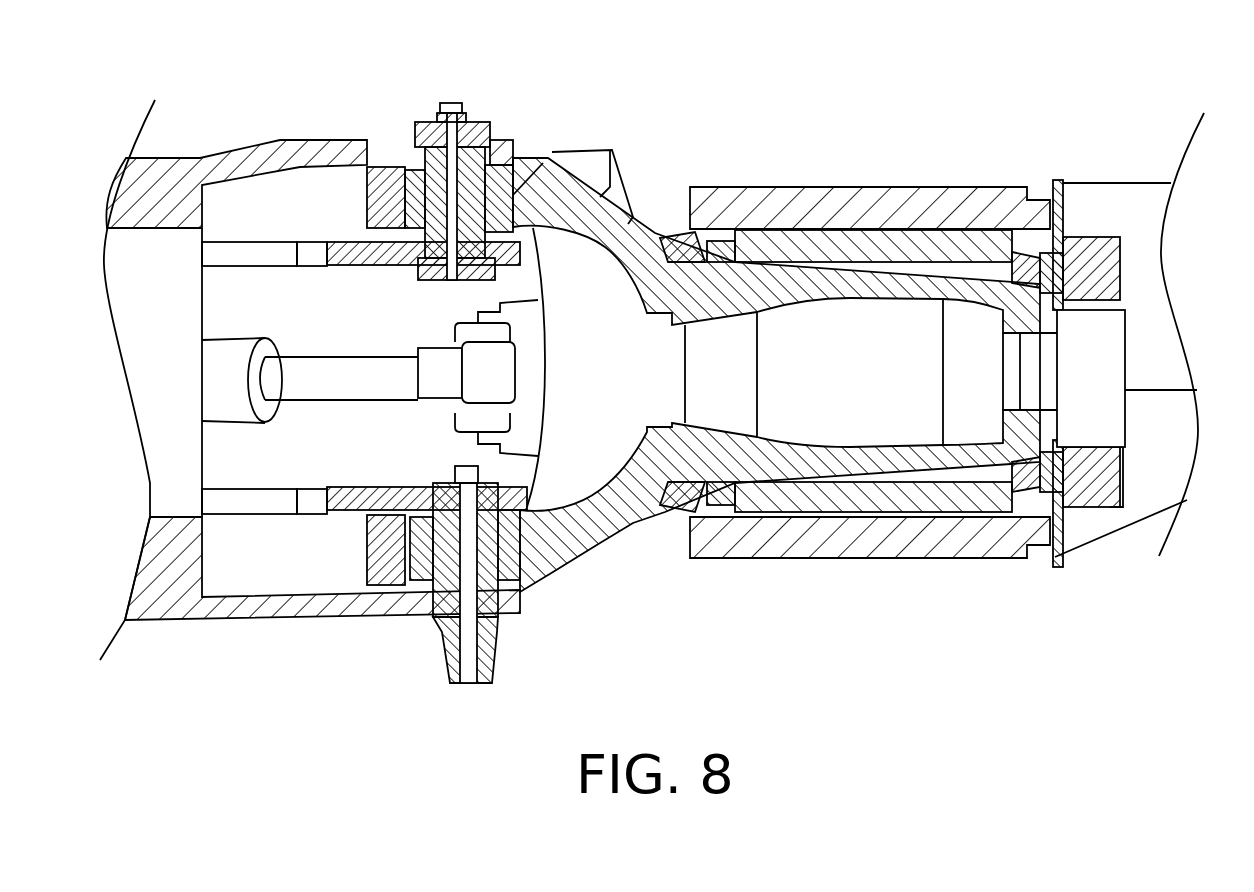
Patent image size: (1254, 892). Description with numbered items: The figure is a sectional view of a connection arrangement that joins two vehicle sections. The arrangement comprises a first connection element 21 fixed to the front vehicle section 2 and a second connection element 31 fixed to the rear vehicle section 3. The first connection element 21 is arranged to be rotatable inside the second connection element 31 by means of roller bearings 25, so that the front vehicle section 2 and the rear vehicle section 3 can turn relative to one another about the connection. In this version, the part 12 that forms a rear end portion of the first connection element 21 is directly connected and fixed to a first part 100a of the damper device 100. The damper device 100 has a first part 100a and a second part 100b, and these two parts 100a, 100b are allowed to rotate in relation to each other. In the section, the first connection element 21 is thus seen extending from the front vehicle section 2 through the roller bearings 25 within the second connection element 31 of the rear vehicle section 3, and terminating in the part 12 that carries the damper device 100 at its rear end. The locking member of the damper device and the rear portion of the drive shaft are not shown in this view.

The front vehicle section 2 is at (303, 155).
The first connection element 21 is at (637, 245).
The roller bearings 25 is at (726, 258).
The second connection element 31 is at (833, 244).
The rear vehicle section 3 is at (932, 205).
The damper device 100 is at (1135, 381).
The part forming a rear end portion of the first connection element 12 is at (1050, 505).
The first part of the damper device 100a is at (1088, 500).
The second part of the damper device 100b is at (1108, 507).